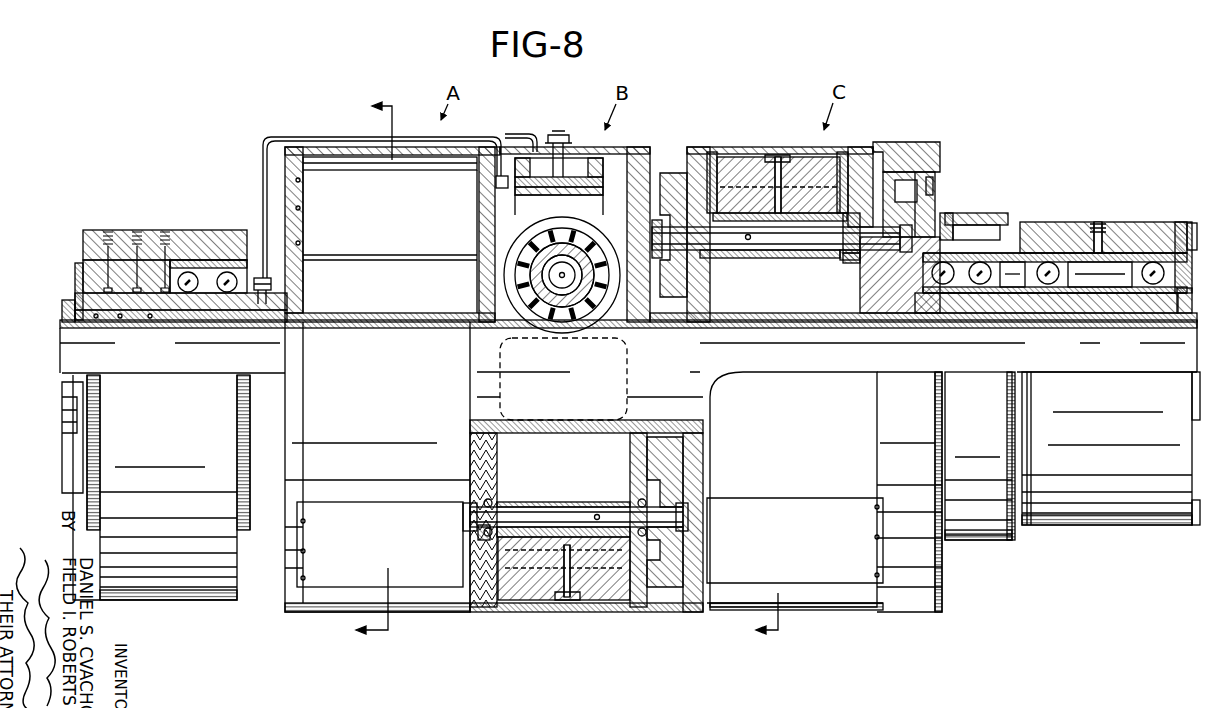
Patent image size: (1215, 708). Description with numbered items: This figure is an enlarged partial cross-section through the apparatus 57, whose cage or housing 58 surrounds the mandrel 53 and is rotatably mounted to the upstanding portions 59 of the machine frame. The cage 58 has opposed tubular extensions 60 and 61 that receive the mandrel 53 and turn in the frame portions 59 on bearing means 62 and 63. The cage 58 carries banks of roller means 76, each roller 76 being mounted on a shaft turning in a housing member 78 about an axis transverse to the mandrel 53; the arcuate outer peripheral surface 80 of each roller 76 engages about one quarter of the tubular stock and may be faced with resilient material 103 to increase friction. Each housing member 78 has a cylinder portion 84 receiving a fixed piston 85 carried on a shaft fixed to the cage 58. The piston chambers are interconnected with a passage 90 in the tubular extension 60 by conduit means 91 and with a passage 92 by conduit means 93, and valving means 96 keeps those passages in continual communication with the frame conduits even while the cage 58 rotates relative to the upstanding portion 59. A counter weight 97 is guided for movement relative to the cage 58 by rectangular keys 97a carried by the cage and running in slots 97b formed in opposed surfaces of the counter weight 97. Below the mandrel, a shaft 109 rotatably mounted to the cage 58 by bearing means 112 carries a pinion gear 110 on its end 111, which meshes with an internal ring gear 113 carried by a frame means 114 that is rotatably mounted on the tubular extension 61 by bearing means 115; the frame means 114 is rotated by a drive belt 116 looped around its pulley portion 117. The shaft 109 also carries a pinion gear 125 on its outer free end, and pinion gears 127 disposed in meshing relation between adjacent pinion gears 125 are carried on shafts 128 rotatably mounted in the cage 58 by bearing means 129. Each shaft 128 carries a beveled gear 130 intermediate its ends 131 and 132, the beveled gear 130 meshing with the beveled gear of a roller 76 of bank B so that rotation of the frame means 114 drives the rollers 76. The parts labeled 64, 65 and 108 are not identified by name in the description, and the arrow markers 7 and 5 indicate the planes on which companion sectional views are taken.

The mandrel 53 is at (655, 371).
The apparatus 57 is at (990, 146).
The cage or housing 58 is at (452, 154).
The upstanding portions 59 is at (97, 234).
The tubular extension 60 is at (76, 306).
The tubular extension 61 is at (1042, 307).
The bearing means 62 is at (206, 262).
The bearing means 63 is at (1112, 306).
The cap 64 is at (920, 144).
The block 65 is at (938, 161).
The roller means 76 is at (558, 338).
The housing member 78 is at (478, 212).
The arcuate outer peripheral surface 80 is at (514, 320).
The cylinder portion 84 is at (552, 186).
The fixed piston 85 is at (580, 176).
The passage 90 is at (186, 310).
The conduit means 91 is at (368, 138).
The passage 92 is at (127, 320).
The conduit means 93 is at (521, 140).
The valving means 96 is at (78, 264).
The counter weight 97 is at (768, 147).
The rectangular keys 97a is at (732, 160).
The slots 97b is at (716, 154).
The resilient material 103 is at (508, 268).
The bearing 108 is at (828, 262).
The shaft 109 is at (788, 252).
The pinion gear 110 is at (862, 262).
The end 111 is at (834, 248).
The bearing means 112 is at (713, 243).
The internal ring gear 113 is at (934, 185).
The frame means 114 is at (940, 223).
The bearing means 115 is at (1000, 246).
The drive belt 116 is at (985, 217).
The pulley portion 117 is at (1002, 216).
The pinion gear 125 is at (758, 258).
The pinion gear 127 is at (676, 490).
The shaft 128 is at (550, 518).
The bearing means 129 is at (490, 499).
The beveled gear 130 is at (580, 501).
The end 131 is at (484, 530).
The end 132 is at (680, 529).
The section line 7 is at (395, 369).
The section line 5 is at (788, 618).